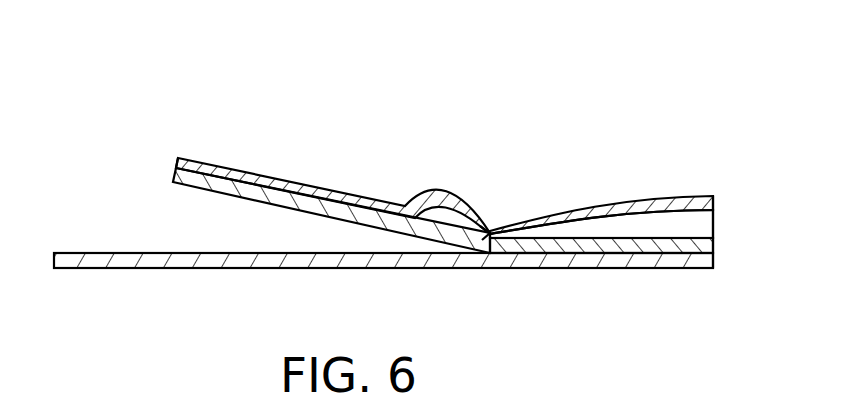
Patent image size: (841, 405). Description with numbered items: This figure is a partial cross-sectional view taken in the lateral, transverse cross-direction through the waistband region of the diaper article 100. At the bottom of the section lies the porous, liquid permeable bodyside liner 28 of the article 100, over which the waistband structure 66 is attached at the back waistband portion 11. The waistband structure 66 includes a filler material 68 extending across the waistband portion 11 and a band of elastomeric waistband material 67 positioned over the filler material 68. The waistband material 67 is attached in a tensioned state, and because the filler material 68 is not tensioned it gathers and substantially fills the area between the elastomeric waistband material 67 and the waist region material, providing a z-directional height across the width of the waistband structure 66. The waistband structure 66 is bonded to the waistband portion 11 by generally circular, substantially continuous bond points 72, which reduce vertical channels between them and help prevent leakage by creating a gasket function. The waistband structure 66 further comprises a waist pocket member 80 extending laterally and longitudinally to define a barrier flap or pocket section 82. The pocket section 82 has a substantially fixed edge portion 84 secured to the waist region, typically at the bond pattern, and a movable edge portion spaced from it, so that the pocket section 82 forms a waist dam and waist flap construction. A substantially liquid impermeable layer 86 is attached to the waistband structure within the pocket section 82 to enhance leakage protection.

The diaper article 100 is at (146, 92).
The pocket section 82 is at (176, 169).
The liquid impermeable layer 86 is at (176, 186).
The waistband material 67 is at (203, 170).
The waist pocket member 80 is at (303, 190).
The bond points 72 is at (490, 230).
The waistband structure 66 is at (632, 196).
The filler material 68 is at (670, 224).
The back waistband portion 11 is at (715, 227).
The fixed edge portion 84 is at (488, 245).
The bodyside liner 28 is at (695, 264).